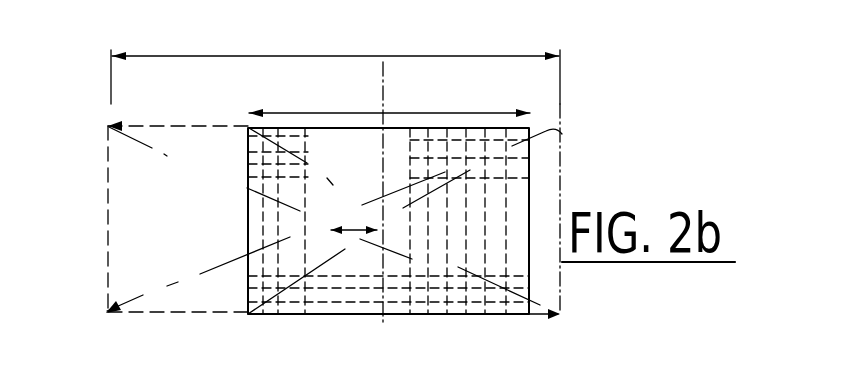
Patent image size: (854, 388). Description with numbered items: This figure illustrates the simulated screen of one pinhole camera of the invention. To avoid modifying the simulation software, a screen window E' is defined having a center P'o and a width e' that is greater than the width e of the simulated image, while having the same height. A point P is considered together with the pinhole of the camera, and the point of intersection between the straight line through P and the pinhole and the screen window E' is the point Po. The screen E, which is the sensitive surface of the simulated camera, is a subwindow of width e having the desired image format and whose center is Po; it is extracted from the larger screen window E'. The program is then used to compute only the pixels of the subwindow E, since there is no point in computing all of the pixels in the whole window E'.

The screen E is at (359, 221).
The screen window E' is at (298, 211).
The width of the screen e is at (389, 103).
The width of the screen window e' is at (335, 63).
The point P is at (380, 246).
The center of the screen Po is at (362, 205).
The center of the screen window P'o is at (328, 206).